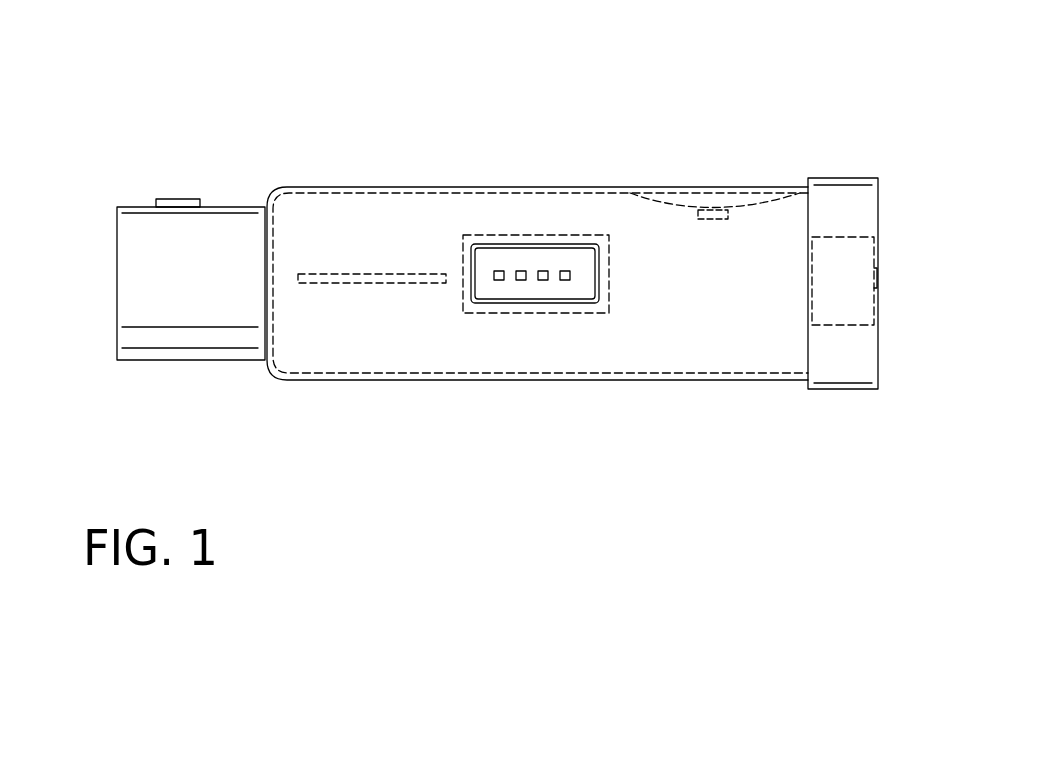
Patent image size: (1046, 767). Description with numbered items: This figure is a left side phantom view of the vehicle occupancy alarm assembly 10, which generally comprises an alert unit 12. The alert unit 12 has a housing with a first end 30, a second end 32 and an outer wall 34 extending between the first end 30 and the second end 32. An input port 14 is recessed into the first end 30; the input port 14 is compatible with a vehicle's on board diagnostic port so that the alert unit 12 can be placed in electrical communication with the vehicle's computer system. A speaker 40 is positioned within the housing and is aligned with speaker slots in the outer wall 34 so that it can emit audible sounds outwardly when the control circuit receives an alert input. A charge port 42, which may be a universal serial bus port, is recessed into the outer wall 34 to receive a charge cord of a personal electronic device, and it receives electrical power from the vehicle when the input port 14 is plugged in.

The vehicle occupancy alarm assembly 10 is at (521, 98).
The alert unit 12 is at (393, 166).
The input port 14 is at (106, 253).
The first end 30 is at (117, 330).
The second end 32 is at (878, 209).
The outer wall 34 is at (660, 345).
The speaker 40 is at (758, 205).
The charge port 42 is at (521, 300).